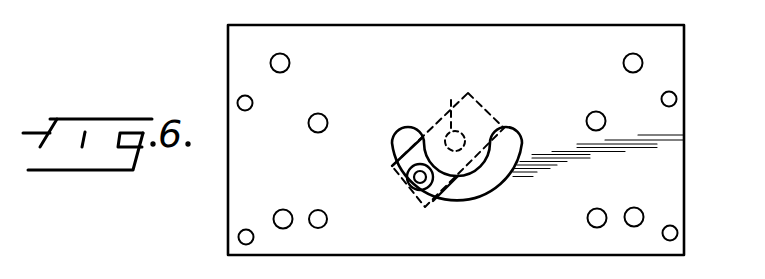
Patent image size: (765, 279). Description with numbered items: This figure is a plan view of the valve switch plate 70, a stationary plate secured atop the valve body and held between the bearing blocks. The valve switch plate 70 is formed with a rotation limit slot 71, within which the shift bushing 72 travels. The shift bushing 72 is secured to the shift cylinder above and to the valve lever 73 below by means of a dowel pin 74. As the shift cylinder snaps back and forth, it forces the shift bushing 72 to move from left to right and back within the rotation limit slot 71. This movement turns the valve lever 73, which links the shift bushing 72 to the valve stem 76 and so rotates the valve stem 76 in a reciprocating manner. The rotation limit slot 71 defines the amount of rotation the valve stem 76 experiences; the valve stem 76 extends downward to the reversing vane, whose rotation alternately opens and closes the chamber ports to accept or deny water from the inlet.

The valve switch plate 70 is at (673, 124).
The rotation limit slot 71 is at (470, 202).
The shift bushing 72 is at (395, 166).
The valve lever 73 is at (480, 103).
The dowel pin 74 is at (410, 195).
The valve stem 76 is at (449, 100).